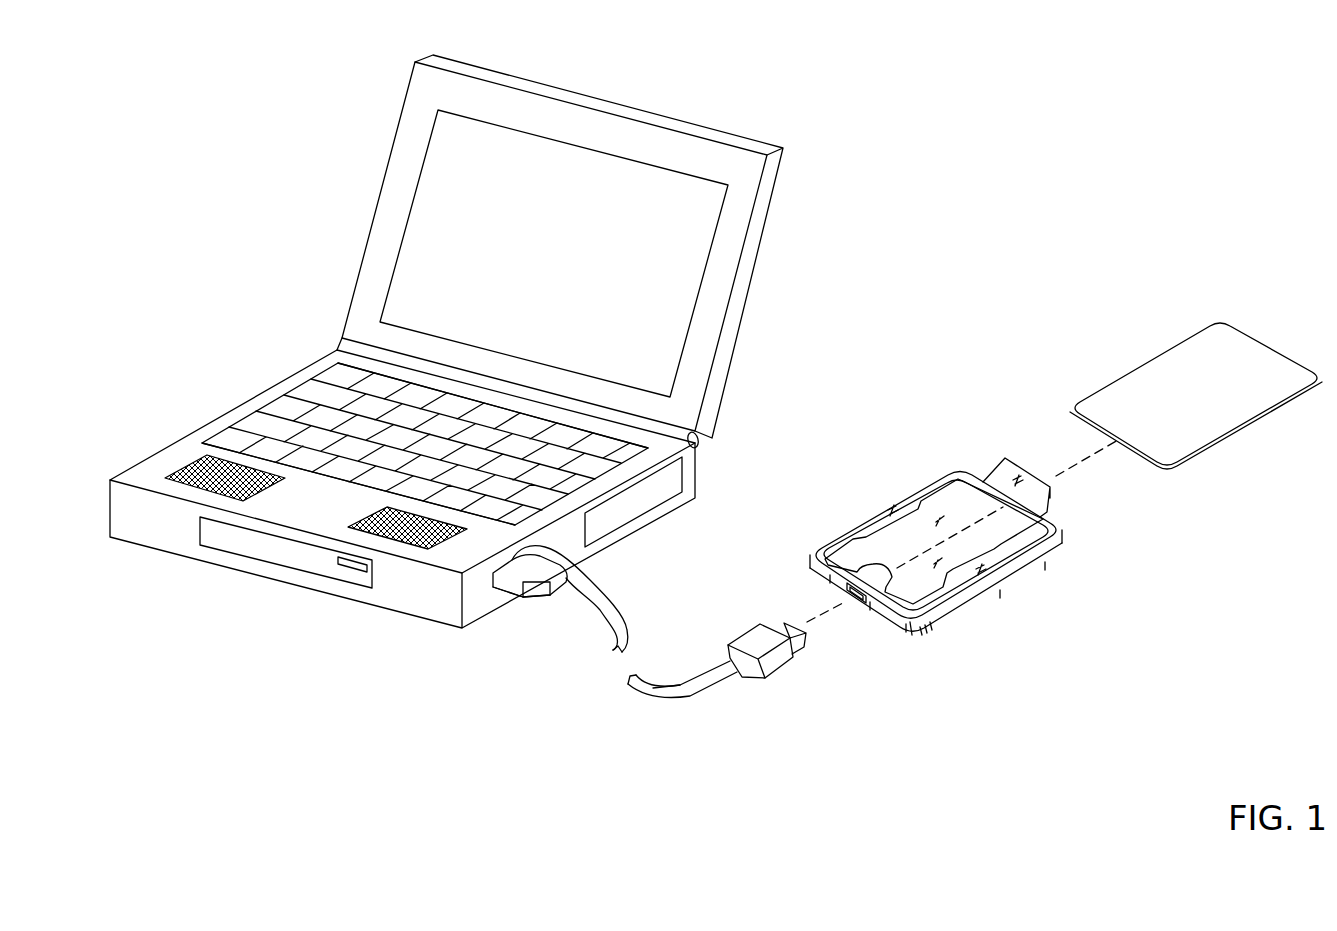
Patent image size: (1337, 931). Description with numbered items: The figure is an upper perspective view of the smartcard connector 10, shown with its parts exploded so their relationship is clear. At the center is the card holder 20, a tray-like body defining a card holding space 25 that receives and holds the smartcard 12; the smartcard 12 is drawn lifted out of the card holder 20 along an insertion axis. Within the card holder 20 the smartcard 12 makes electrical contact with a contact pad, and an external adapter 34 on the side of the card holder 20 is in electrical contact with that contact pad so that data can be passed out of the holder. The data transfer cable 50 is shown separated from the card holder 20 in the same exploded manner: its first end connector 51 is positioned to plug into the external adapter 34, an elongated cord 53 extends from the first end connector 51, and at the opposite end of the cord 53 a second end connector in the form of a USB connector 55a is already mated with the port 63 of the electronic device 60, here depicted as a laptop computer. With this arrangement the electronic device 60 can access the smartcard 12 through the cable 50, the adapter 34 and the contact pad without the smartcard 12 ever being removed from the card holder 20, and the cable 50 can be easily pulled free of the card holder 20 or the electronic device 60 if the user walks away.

The smartcard connector 10 is at (958, 213).
The smartcard 12 is at (1143, 361).
The card holder 20 is at (1005, 610).
The card holding space 25 is at (953, 507).
The external adapter 34 is at (855, 603).
The data transfer cable 50 is at (642, 697).
The first end connector 51 is at (795, 649).
The elongated cord 53 is at (697, 697).
The USB connector 55a is at (530, 598).
The electronic device 60 is at (617, 102).
The port 63 is at (563, 568).